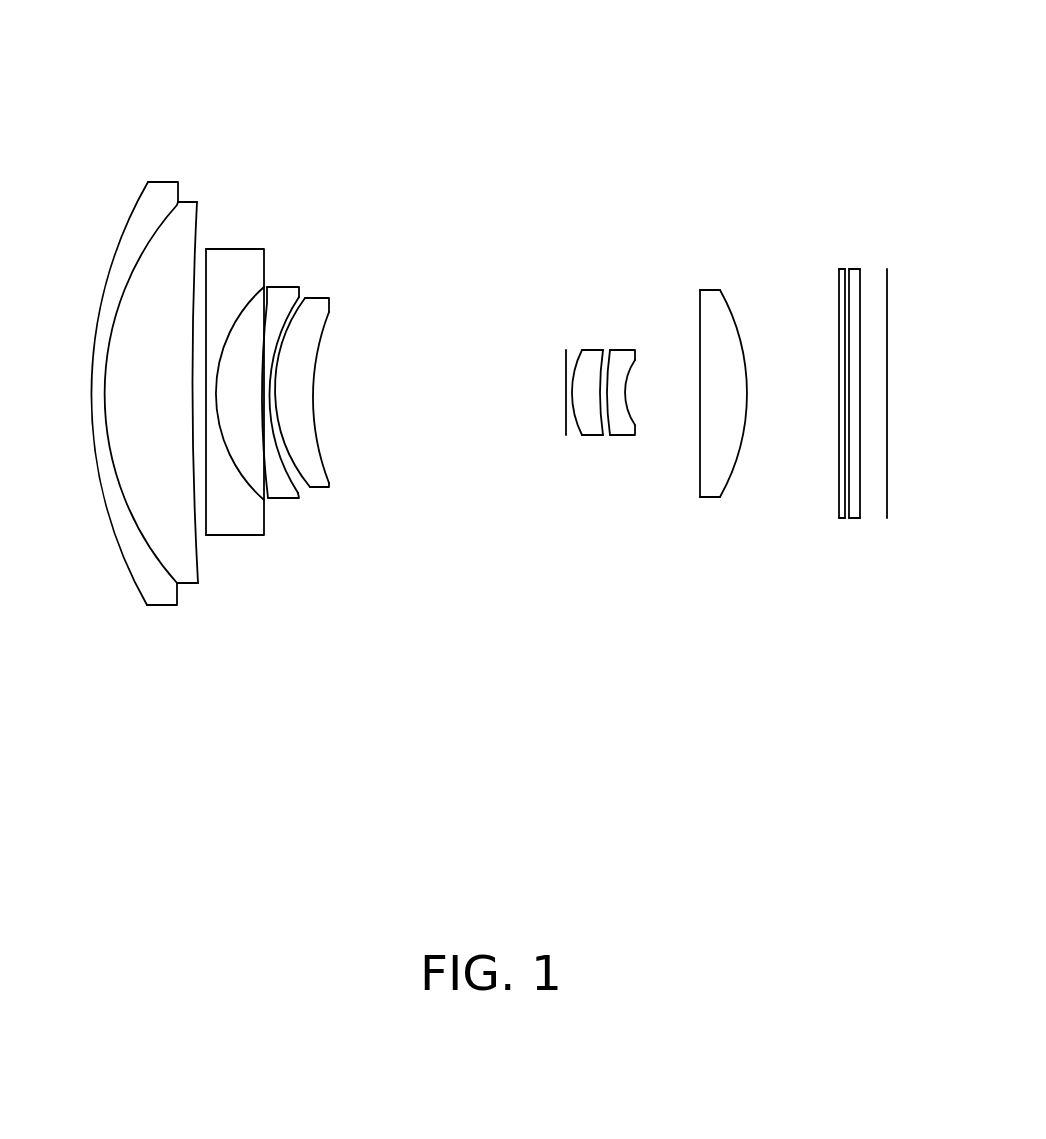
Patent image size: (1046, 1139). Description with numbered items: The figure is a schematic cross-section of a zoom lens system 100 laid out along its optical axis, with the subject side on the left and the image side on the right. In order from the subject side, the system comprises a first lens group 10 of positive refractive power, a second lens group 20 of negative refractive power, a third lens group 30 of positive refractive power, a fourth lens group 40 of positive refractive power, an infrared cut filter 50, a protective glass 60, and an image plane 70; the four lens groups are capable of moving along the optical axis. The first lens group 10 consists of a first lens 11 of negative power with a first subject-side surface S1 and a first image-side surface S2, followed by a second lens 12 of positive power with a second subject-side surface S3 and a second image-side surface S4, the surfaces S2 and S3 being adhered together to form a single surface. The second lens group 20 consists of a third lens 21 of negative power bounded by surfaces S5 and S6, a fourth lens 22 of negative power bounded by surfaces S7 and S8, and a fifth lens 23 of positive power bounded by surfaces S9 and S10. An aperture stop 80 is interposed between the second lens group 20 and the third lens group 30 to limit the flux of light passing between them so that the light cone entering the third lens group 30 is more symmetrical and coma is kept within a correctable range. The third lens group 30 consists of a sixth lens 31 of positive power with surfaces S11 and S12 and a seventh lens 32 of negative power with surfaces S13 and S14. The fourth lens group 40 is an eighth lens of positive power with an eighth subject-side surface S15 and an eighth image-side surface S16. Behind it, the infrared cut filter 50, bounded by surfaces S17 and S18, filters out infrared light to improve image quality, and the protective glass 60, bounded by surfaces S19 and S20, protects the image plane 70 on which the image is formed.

The zoom lens system 100 is at (509, 76).
The first lens group 10 is at (179, 408).
The first lens 11 is at (134, 381).
The second lens 12 is at (222, 384).
The second lens group 20 is at (311, 411).
The third lens 21 is at (271, 383).
The fourth lens 22 is at (339, 438).
The fifth lens 23 is at (345, 468).
The third lens group 30 is at (585, 422).
The sixth lens 31 is at (548, 396).
The seventh lens 32 is at (642, 396).
The fourth lens group 40 is at (701, 397).
The infrared cut filter 50 is at (809, 396).
The protective glass 60 is at (813, 386).
The image plane 70 is at (883, 507).
The aperture stop 80 is at (565, 417).
The first subject-side surface S1 is at (133, 208).
The first image-side surface S2 is at (160, 223).
The second subject-side surface S3 is at (193, 202).
The second image-side surface S4 is at (198, 225).
The third subject-side surface S5 is at (207, 274).
The third image-side surface S6 is at (265, 265).
The fourth subject-side surface S7 is at (268, 303).
The fourth image-side surface S8 is at (296, 314).
The fifth subject-side surface S9 is at (280, 352).
The fifth image-side surface S10 is at (313, 403).
The sixth subject-side surface S11 is at (578, 353).
The sixth image-side surface S12 is at (603, 357).
The seventh subject-side surface S13 is at (613, 348).
The seventh image-side surface S14 is at (630, 375).
The eighth subject-side surface S15 is at (700, 310).
The eighth image-side surface S16 is at (733, 308).
The ninth subject-side surface S17 is at (838, 310).
The ninth image-side surface S18 is at (840, 270).
The tenth subject-side surface S19 is at (848, 342).
The tenth image-side surface S20 is at (862, 287).